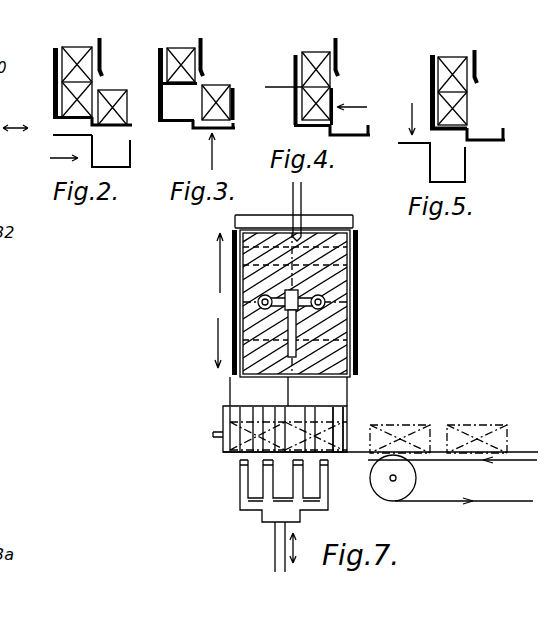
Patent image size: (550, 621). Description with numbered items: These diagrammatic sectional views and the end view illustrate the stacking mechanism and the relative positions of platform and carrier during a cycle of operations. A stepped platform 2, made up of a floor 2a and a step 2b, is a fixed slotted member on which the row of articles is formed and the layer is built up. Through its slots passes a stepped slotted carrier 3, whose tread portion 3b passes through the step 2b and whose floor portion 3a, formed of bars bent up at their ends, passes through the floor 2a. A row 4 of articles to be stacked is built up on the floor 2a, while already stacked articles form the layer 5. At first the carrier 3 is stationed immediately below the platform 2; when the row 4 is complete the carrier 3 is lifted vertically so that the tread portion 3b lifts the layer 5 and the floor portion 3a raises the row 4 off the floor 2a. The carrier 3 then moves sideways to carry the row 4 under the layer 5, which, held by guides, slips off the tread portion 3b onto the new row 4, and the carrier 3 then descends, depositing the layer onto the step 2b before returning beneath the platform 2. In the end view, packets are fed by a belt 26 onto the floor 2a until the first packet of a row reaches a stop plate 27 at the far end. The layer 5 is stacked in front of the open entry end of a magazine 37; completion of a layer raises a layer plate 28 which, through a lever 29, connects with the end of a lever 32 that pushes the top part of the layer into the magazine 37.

In FIG. 3, the stepped platform 2 is at (190, 129).
In FIG. 4, the stepped platform 2 is at (328, 136).
In FIG. 5, the stepped platform 2 is at (462, 141).
In FIG. 2, the floor 2a is at (132, 126).
In FIG. 7, the floor 2a is at (232, 451).
In FIG. 2, the step 2b is at (62, 119).
In FIG. 3, the stepped slotted carrier 3 is at (194, 119).
In FIG. 4, the stepped slotted carrier 3 is at (298, 126).
In FIG. 5, the stepped slotted carrier 3 is at (428, 182).
In FIG. 2, the floor portion 3a is at (117, 172).
In FIG. 7, the floor portion 3a is at (238, 492).
In FIG. 2, the tread portion 3b is at (63, 135).
In FIG. 7, the tread portion 3b is at (237, 461).
In FIG. 2, the row 4 is at (125, 90).
In FIG. 3, the row 4 is at (226, 85).
In FIG. 7, the row 4 is at (342, 420).
In FIG. 2, the layer 5 is at (78, 47).
In FIG. 3, the layer 5 is at (187, 48).
In FIG. 4, the layer 5 is at (315, 52).
In FIG. 5, the layer 5 is at (453, 57).
In FIG. 7, the belt 26 is at (517, 461).
In FIG. 7, the stop plate 27 is at (227, 407).
In FIG. 7, the layer plate 28 is at (226, 263).
In FIG. 7, the lever 29 is at (302, 190).
In FIG. 7, the lever 32 is at (284, 349).
In FIG. 7, the magazine 37 is at (359, 253).